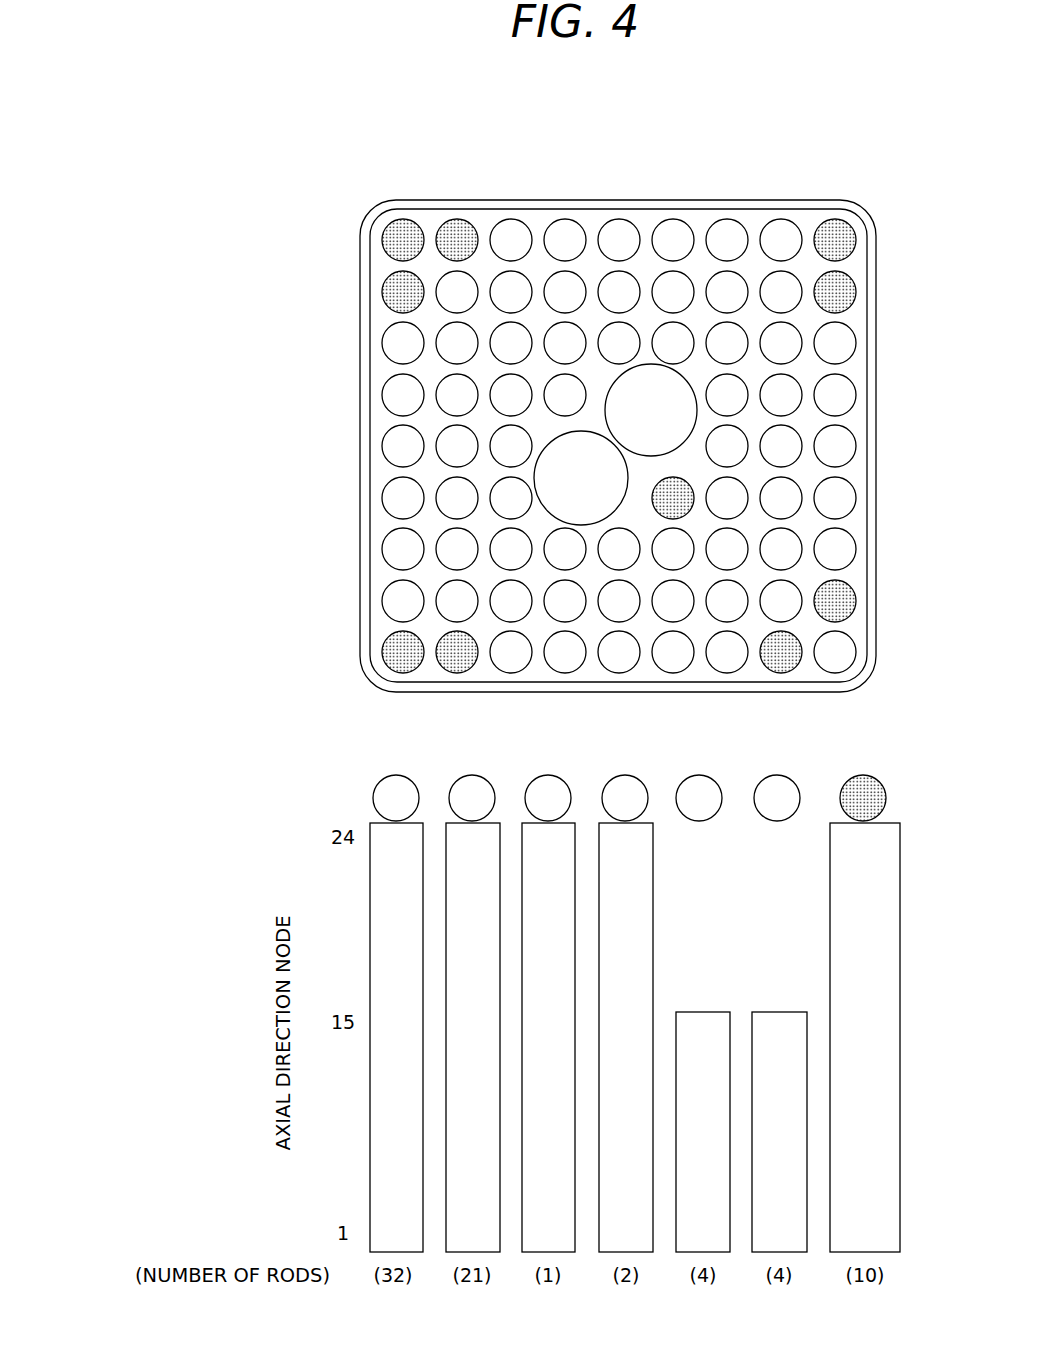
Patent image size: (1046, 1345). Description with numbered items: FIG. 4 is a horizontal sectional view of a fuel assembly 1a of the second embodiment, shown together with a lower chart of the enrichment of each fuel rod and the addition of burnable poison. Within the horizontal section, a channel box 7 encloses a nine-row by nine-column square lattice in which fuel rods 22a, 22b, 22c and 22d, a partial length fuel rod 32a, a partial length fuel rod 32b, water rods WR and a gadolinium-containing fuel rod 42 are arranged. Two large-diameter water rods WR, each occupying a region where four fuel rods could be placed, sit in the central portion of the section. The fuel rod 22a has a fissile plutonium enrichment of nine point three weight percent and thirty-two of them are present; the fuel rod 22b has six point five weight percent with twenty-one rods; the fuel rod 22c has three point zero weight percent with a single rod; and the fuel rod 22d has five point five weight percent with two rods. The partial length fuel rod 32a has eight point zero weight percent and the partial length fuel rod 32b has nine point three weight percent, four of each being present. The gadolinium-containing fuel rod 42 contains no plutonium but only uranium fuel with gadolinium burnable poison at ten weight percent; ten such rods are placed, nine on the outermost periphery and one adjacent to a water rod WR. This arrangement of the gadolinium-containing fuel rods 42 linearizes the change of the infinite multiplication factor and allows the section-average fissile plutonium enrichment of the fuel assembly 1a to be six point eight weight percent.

The fuel assembly 1a is at (530, 180).
The channel box 7 is at (876, 445).
The fuel rod 22a is at (688, 285).
The fuel rod 22b is at (857, 343).
The fuel rod 22c is at (855, 655).
The fuel rod 22d is at (778, 218).
The partial length fuel rod 32a is at (438, 620).
The partial length fuel rod 32b is at (438, 465).
The gadolinium-containing fuel rod 42 is at (857, 238).